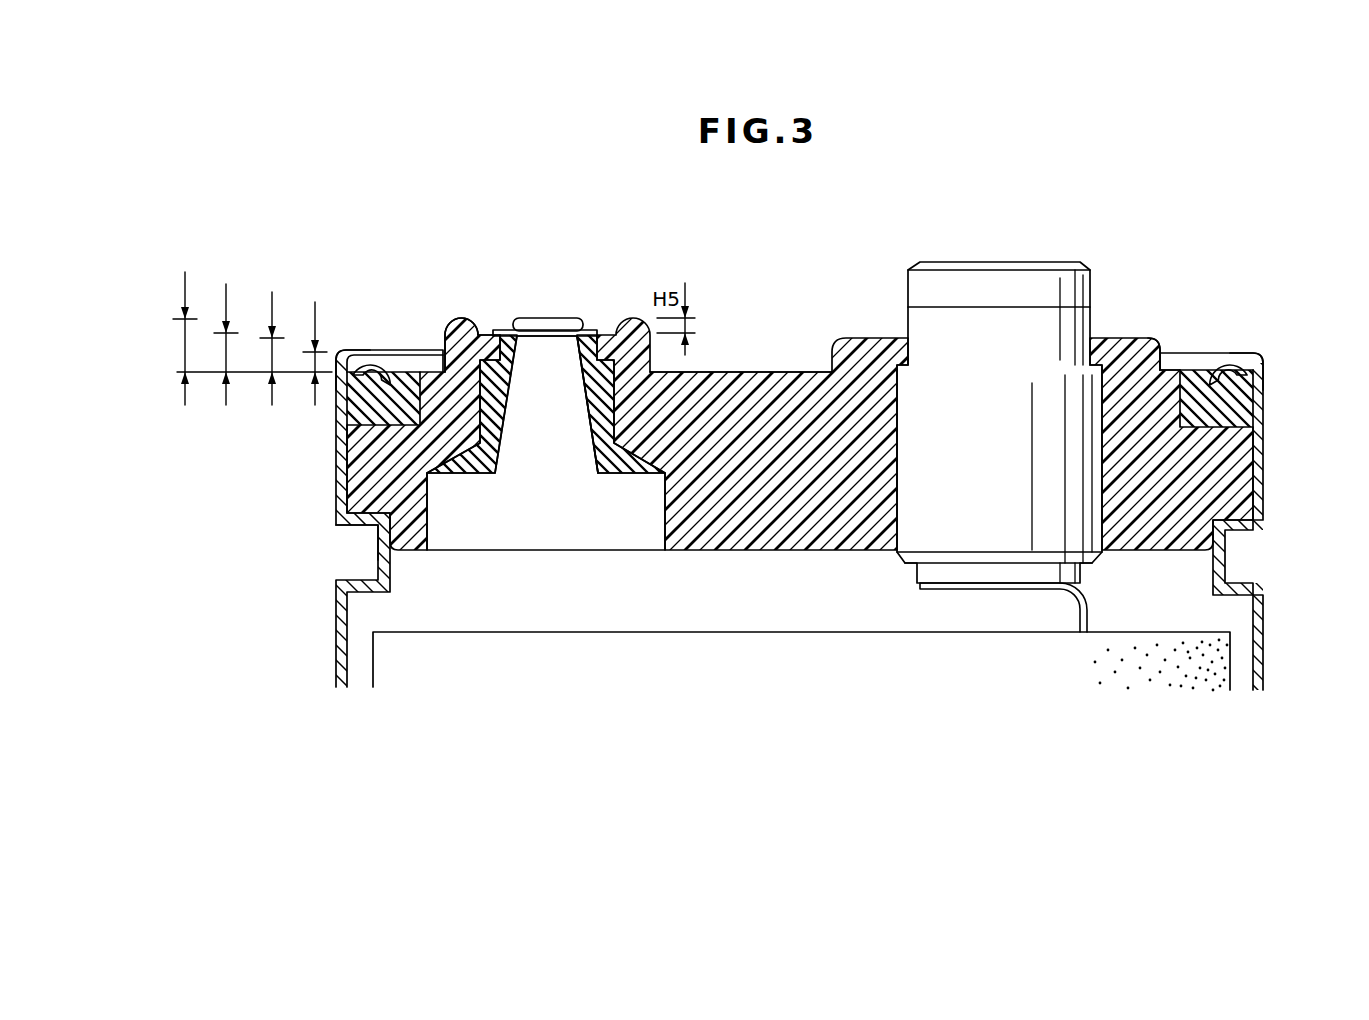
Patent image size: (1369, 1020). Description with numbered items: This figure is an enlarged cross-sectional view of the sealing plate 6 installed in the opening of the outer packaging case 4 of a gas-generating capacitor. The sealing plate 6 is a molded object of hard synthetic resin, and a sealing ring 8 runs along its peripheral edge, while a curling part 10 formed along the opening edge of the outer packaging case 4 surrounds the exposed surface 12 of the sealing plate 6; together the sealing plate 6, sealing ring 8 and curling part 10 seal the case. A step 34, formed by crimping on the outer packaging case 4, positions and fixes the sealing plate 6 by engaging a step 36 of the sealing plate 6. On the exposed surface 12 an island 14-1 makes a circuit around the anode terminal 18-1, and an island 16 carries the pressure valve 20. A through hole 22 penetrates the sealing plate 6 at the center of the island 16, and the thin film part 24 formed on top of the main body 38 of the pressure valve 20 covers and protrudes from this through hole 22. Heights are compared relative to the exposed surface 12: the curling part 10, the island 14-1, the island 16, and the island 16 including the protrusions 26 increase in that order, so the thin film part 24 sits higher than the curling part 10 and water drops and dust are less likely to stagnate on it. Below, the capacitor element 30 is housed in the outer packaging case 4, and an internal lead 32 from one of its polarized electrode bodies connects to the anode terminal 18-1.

The outer packaging case 4 is at (334, 650).
The sealing plate 6 is at (1236, 465).
The sealing ring 8 is at (1235, 405).
The curling part 10 is at (1258, 355).
The exposed surface 12 is at (715, 372).
The island 14-1 is at (1148, 338).
The island 16 is at (449, 333).
The anode terminal 18-1 is at (1018, 262).
The pressure valve 20 is at (165, 333).
The through hole 22 is at (427, 515).
The thin film part 24 is at (533, 320).
The protrusion 26 is at (568, 318).
The capacitor element 30 is at (1190, 633).
The internal lead 32 is at (1083, 593).
The step 34 is at (337, 500).
The step 36 is at (350, 535).
The main body 38 is at (597, 445).